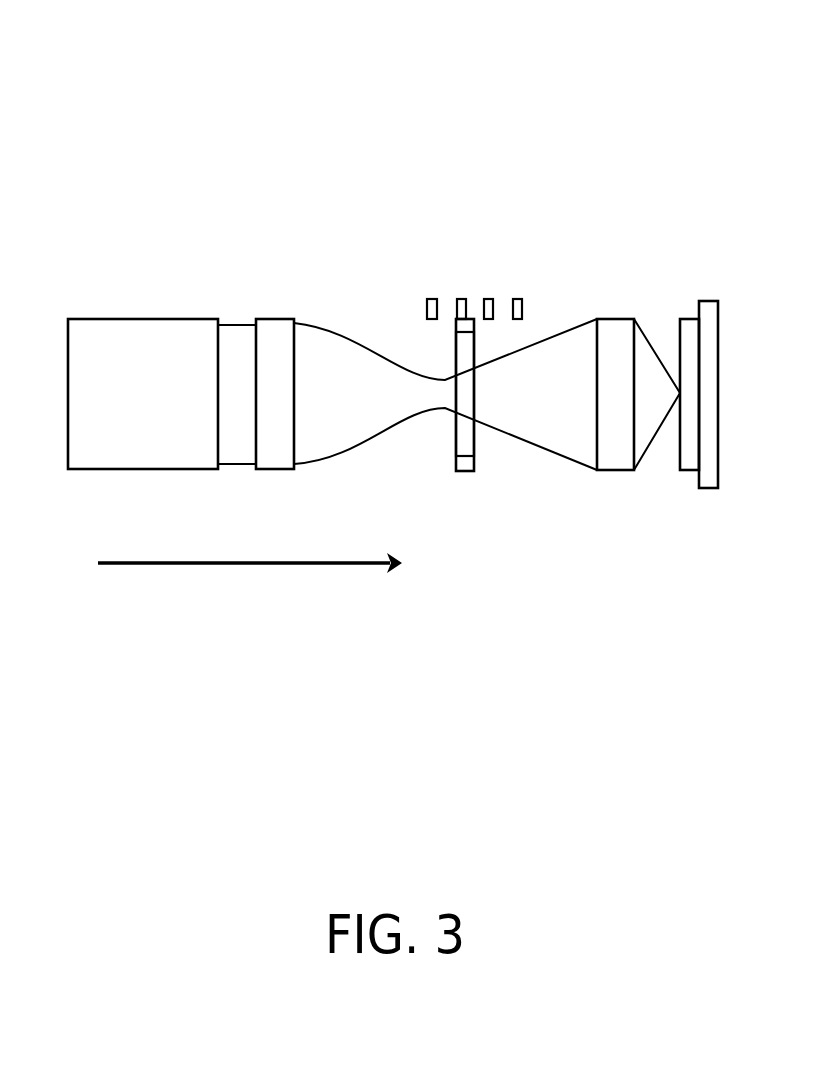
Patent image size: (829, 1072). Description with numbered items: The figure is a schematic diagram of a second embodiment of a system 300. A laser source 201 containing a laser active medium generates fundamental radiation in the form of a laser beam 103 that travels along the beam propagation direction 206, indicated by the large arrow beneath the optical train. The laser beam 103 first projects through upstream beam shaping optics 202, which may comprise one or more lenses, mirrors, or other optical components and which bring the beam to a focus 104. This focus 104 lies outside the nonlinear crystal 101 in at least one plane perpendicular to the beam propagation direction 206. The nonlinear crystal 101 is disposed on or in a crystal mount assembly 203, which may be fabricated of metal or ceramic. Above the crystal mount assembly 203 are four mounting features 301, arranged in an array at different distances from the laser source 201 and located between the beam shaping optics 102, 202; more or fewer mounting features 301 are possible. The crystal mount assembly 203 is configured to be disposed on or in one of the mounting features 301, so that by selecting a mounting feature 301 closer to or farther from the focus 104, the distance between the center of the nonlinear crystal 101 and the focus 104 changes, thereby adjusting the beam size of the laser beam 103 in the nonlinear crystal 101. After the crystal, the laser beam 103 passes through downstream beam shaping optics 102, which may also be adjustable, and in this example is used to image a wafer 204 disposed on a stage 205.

The system 300 is at (566, 140).
The laser source 201 is at (143, 394).
The laser beam 103 is at (232, 338).
The beam shaping optics 202 is at (277, 319).
The focus 104 is at (436, 425).
The crystal mount assembly 203 is at (467, 471).
The nonlinear crystal 101 is at (474, 447).
The mounting features 301 is at (432, 298).
The beam shaping optics 102 is at (613, 319).
The wafer 204 is at (687, 470).
The stage 205 is at (710, 301).
The beam propagation direction 206 is at (242, 565).